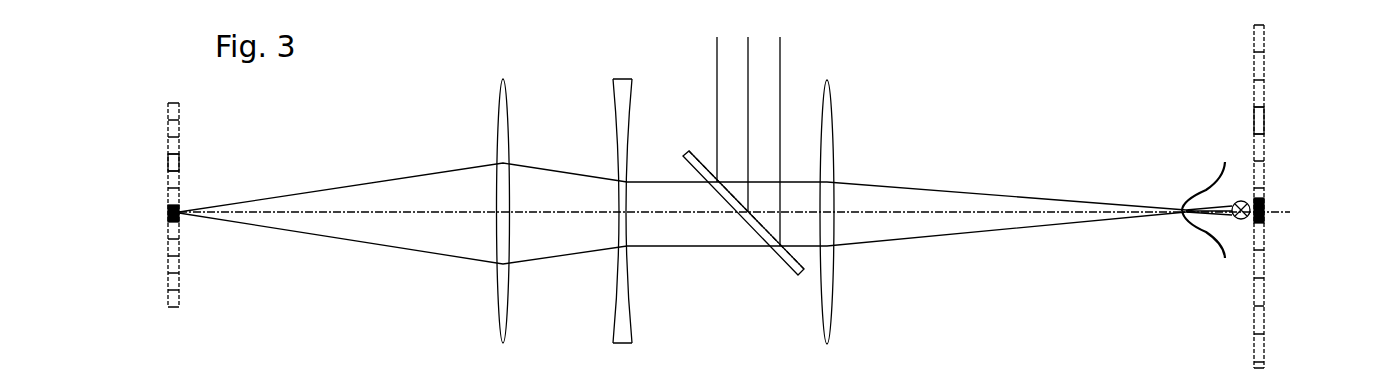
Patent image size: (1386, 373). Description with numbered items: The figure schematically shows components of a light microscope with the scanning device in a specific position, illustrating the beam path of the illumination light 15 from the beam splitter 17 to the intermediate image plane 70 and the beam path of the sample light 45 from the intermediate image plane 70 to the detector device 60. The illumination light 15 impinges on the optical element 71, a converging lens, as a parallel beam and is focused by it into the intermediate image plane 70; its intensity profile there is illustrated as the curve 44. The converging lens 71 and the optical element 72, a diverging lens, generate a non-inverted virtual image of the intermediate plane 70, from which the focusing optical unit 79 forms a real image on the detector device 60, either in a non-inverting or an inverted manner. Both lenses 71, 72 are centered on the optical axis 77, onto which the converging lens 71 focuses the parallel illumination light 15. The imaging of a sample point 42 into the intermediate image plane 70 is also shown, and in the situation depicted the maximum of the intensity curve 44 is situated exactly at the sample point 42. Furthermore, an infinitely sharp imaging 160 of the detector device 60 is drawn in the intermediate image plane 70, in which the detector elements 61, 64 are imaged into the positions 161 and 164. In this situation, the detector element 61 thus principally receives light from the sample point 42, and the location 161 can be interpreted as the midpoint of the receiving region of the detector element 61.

The detector device 60 is at (143, 89).
The detector element 64 is at (175, 161).
The detector element 61 is at (168, 210).
The optical axis 77 is at (302, 211).
The sample light 45 is at (365, 234).
The focusing optical unit 79 is at (500, 110).
The optical element 72 is at (618, 92).
The illumination light 15 is at (726, 77).
The beam splitter 17 is at (689, 154).
The optical element 71 is at (833, 107).
The intensity curve 44 is at (1197, 190).
The sample point 42 is at (1240, 198).
The intermediate image plane 70 is at (1234, 76).
The imaging of the detector device 160 is at (1288, 296).
The position 164 is at (1257, 124).
The imaging 161 is at (1265, 202).